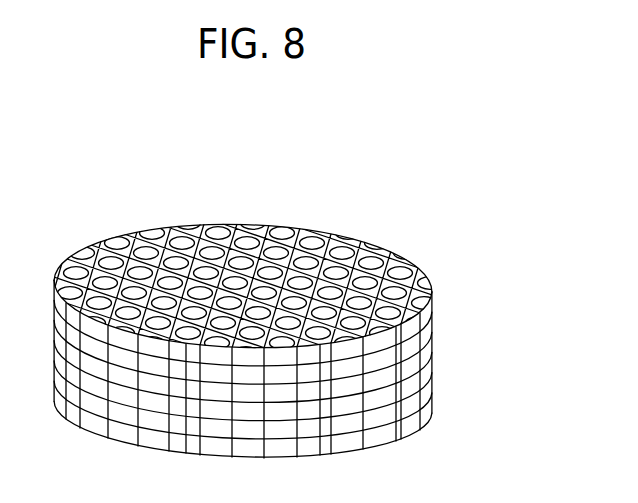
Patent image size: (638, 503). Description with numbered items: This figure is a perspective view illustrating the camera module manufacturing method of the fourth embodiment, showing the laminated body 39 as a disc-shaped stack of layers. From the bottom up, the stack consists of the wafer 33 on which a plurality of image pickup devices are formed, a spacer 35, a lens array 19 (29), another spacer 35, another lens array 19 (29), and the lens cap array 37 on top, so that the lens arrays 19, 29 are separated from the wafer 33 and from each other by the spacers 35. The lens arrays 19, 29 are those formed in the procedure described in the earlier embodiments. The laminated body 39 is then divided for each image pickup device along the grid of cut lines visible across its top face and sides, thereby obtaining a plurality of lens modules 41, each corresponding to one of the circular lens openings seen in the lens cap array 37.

The laminated body 39 is at (428, 242).
The lens module 41 is at (168, 262).
The lens cap array 37 is at (433, 304).
The lens array 19 is at (318, 363).
The lens array 29 is at (433, 324).
The spacer 35 is at (433, 342).
The wafer 33 is at (432, 408).